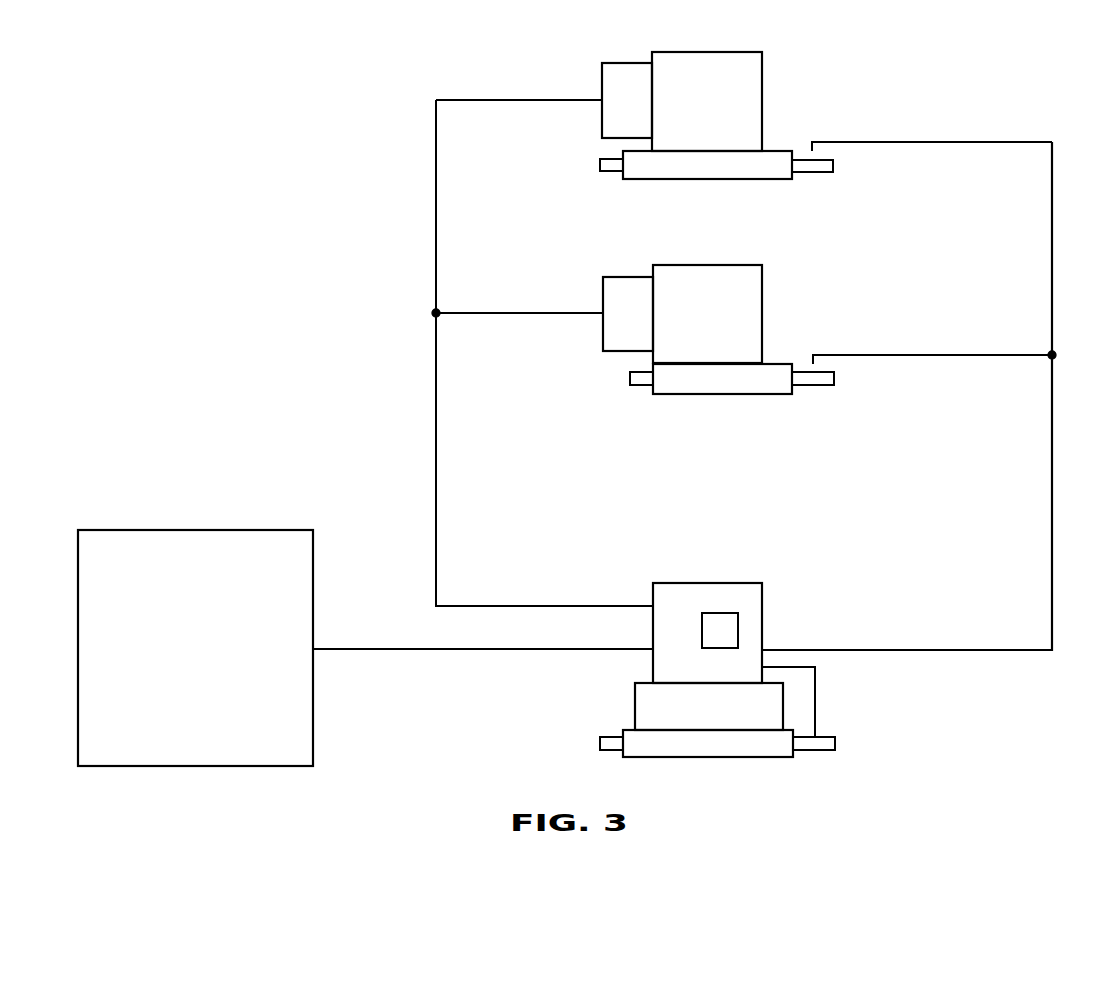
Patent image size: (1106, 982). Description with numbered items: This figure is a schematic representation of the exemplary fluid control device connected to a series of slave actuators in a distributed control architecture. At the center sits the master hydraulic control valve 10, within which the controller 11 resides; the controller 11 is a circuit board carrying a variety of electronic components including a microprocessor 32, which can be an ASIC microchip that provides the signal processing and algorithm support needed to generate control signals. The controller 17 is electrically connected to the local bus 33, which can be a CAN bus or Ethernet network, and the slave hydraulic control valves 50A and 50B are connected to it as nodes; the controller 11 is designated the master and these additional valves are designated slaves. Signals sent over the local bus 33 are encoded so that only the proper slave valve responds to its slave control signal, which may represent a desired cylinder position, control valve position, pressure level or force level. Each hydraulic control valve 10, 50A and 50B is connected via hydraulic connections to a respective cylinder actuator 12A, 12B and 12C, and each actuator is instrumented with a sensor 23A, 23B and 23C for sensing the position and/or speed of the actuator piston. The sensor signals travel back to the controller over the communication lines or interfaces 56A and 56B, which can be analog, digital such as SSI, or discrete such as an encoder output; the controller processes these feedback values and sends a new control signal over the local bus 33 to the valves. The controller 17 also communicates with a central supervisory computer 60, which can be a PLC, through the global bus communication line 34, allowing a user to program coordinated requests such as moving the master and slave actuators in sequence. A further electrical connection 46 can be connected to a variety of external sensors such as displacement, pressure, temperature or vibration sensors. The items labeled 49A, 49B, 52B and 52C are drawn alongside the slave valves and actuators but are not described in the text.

The hydraulic control valve 10 is at (668, 713).
The controller 11 is at (688, 612).
The cylinder actuator 12A is at (765, 748).
The cylinder actuator 12B is at (720, 180).
The cylinder actuator 12C is at (743, 395).
The controller 17 is at (782, 596).
The actuator sensor 23A is at (836, 744).
The actuator sensor 23B is at (817, 169).
The actuator sensor 23C is at (817, 381).
The microprocessor 32 is at (723, 628).
The local bus 33 is at (436, 497).
The global bus communication line 34 is at (463, 650).
The connector 46 is at (942, 651).
The auxiliary unit 49A is at (594, 67).
The auxiliary unit 49B is at (592, 285).
The slave hydraulic control valve 50A is at (736, 90).
The slave hydraulic control valve 50B is at (736, 305).
The terminal 52B is at (652, 169).
The terminal 52C is at (682, 379).
The interface 56A is at (978, 143).
The interface 56B is at (978, 356).
The central supervisory computer 60 is at (163, 547).